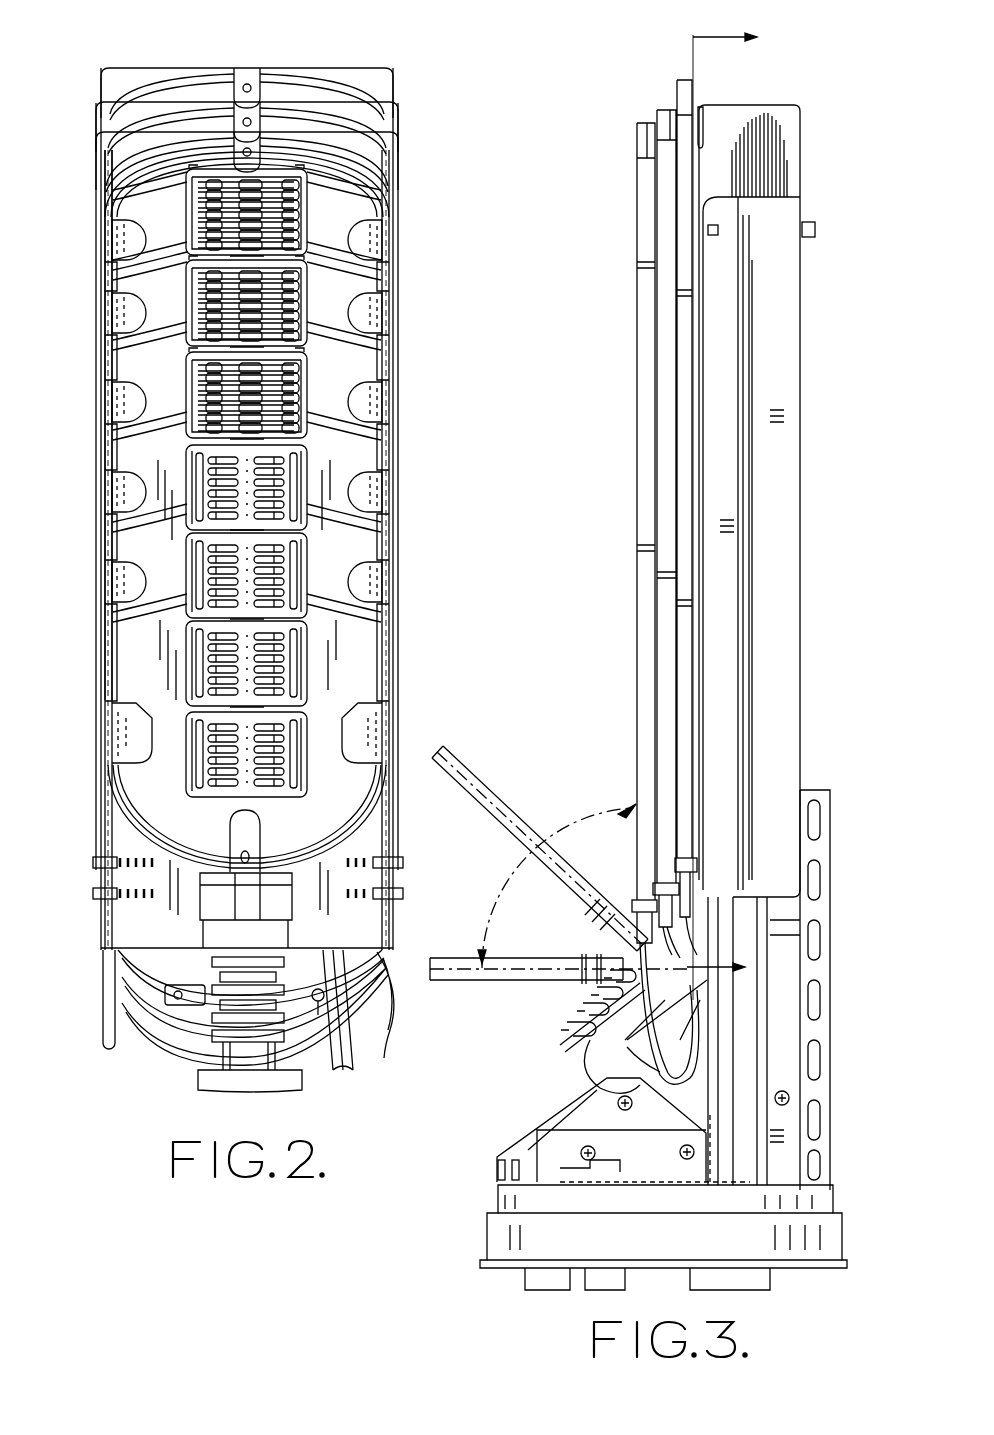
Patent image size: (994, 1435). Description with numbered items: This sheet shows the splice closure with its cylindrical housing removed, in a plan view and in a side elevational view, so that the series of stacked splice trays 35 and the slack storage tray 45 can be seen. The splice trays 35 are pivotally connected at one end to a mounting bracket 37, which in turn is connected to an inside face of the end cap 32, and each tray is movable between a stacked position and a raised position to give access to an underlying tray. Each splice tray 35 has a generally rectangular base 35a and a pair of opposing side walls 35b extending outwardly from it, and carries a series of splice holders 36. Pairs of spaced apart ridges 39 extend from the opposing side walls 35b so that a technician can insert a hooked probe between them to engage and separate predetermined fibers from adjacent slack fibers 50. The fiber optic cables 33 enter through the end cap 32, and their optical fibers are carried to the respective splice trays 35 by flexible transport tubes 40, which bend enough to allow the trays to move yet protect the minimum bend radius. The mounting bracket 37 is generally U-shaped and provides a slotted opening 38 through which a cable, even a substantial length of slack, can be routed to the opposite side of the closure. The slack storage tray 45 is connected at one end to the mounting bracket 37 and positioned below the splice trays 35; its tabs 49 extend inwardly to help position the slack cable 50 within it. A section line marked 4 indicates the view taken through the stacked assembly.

In FIG. 3, the section line 4- 4 is at (714, 503).
In FIG. 3, the end cap 32 is at (515, 1268).
In FIG. 3, the fiber optic cable 33 is at (732, 1084).
In FIG. 2, the splice tray 35 is at (383, 90).
In FIG. 3, the splice tray 35 is at (677, 92).
In FIG. 2, the base 35a is at (132, 795).
In FIG. 2, the side wall 35b is at (100, 323).
In FIG. 2, the splice holder 36 is at (300, 410).
In FIG. 3, the mounting bracket 37 is at (522, 1148).
In FIG. 3, the slotted opening 38 is at (590, 1063).
In FIG. 2, the ridge 39 is at (104, 268).
In FIG. 2, the transport tube 40 is at (108, 978).
In FIG. 3, the transport tube 40 is at (627, 1097).
In FIG. 3, the slack storage tray 45 is at (800, 552).
In FIG. 3, the tab 49 is at (704, 128).
In FIG. 3, the slack cable 50 is at (773, 157).